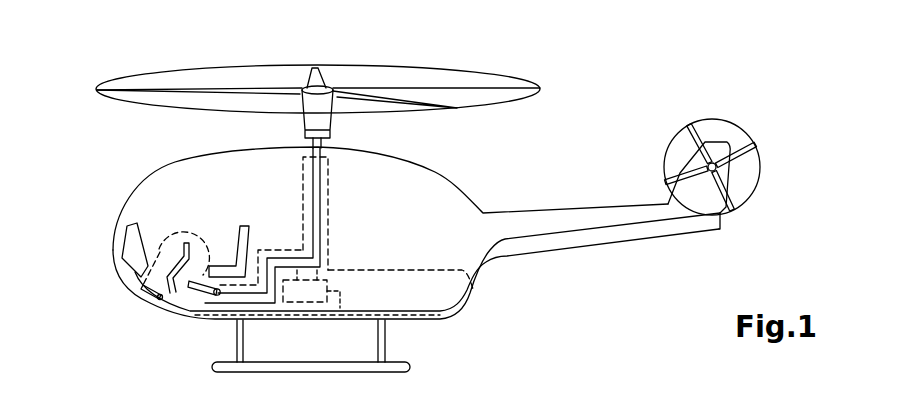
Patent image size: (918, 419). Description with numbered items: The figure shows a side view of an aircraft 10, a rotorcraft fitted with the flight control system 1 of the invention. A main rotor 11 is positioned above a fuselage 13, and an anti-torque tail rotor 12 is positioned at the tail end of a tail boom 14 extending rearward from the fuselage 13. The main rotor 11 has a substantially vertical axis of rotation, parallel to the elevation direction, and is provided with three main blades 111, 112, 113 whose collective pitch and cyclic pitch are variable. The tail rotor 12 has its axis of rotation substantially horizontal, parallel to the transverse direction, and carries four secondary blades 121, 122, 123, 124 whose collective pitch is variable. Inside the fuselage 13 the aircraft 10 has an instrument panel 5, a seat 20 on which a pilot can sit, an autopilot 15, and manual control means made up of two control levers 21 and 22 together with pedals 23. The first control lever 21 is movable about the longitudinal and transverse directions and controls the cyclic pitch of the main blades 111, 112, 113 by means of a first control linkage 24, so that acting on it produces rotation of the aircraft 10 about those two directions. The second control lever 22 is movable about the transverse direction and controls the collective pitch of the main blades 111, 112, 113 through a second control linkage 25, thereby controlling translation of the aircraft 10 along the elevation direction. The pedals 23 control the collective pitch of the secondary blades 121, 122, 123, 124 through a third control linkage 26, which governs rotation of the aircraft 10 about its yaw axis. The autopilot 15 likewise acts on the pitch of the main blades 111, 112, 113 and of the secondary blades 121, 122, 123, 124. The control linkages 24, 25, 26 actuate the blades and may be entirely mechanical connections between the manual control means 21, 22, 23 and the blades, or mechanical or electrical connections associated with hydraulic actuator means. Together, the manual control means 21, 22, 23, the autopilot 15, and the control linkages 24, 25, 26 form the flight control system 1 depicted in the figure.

The flight control system 1 is at (416, 262).
The instrument panel 5 is at (124, 247).
The aircraft 10 is at (356, 380).
The main rotor 11 is at (470, 72).
The main blade 111 is at (128, 88).
The main blade 112 is at (460, 108).
The main blade 113 is at (313, 68).
The anti-torque tail rotor 12 is at (762, 185).
The secondary blade 121 is at (678, 187).
The secondary blade 122 is at (690, 127).
The secondary blade 123 is at (752, 147).
The secondary blade 124 is at (733, 212).
The fuselage 13 is at (460, 308).
The tail boom 14 is at (627, 247).
The autopilot 15 is at (297, 302).
The seat 20 is at (238, 240).
The first control lever 21 is at (188, 234).
The second control lever 22 is at (202, 293).
The pedals 23 is at (142, 297).
The first control linkage 24 is at (322, 208).
The second control linkage 25 is at (303, 182).
The third control linkage 26 is at (468, 262).